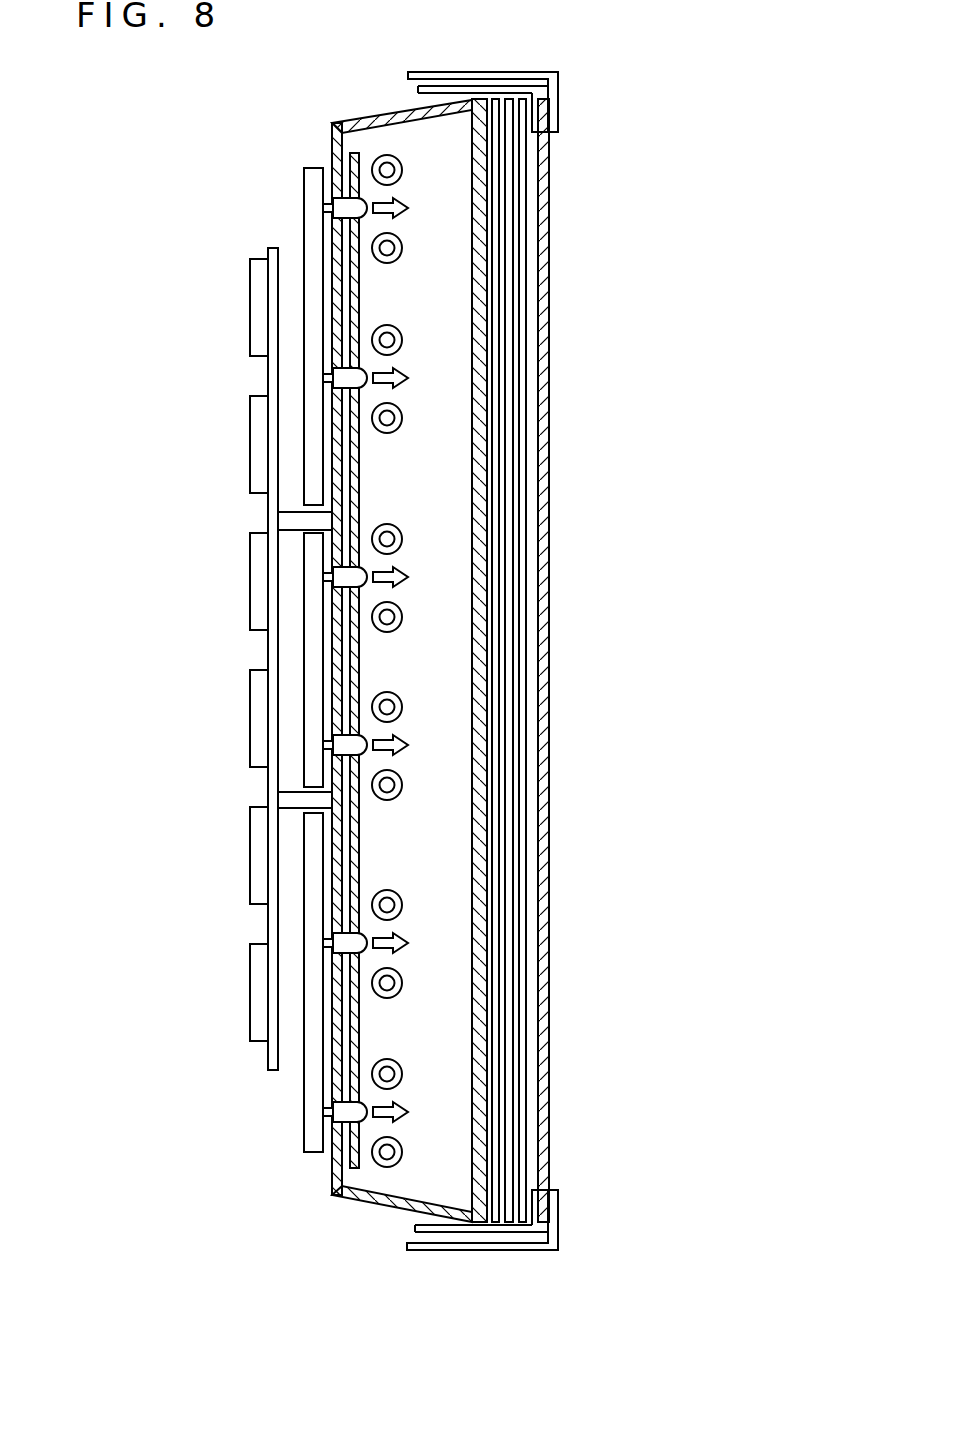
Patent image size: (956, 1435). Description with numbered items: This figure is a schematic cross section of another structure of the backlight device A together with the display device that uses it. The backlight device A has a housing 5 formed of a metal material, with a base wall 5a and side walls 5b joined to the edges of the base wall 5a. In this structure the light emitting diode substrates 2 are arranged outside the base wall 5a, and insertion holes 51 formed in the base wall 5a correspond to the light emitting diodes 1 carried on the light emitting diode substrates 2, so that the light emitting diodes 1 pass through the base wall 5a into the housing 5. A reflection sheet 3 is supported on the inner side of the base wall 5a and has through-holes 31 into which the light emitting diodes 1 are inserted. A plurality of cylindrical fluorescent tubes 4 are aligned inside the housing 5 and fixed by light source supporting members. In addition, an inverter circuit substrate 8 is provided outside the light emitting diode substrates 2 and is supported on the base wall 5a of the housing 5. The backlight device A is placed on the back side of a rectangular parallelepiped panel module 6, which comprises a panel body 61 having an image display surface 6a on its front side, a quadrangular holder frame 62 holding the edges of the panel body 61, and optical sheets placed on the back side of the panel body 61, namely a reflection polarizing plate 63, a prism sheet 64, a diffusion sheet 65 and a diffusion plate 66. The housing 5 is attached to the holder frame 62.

The light emitting diode 1 is at (367, 198).
The light emitting diode substrate 2 is at (310, 222).
The reflection sheet 3 is at (352, 1008).
The through-hole 31 is at (365, 950).
The fluorescent tube 4 is at (400, 533).
The housing 5 is at (327, 683).
The base wall 5a is at (328, 1172).
The side wall 5b is at (378, 115).
The insertion hole 51 is at (330, 915).
The panel module 6 is at (530, 707).
The image display surface 6a is at (552, 605).
The panel body 61 is at (552, 880).
The holder frame 62 is at (470, 1225).
The reflection polarizing plate 63 is at (527, 806).
The prism sheet 64 is at (510, 748).
The diffusion sheet 65 is at (497, 710).
The diffusion plate 66 is at (482, 655).
The inverter circuit substrate 8 is at (258, 782).
The backlight device A is at (314, 1208).